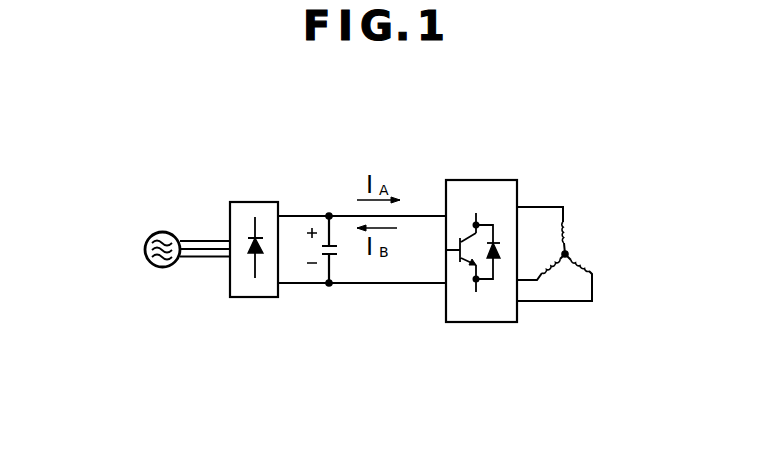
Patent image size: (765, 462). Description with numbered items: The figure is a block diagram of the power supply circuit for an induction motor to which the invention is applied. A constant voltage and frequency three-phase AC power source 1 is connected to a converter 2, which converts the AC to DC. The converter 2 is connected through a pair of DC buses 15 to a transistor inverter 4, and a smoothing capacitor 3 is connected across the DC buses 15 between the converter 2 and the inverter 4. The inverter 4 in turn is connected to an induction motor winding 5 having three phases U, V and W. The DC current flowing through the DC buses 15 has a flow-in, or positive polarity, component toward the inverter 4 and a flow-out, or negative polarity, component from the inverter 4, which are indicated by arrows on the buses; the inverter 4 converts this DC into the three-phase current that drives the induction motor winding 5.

The three-phase AC power source 1 is at (172, 232).
The converter 2 is at (265, 202).
The smoothing capacitor 3 is at (331, 216).
The transistor inverter 4 is at (511, 180).
The induction motor winding 5 is at (585, 245).
The DC buses 15 is at (425, 283).